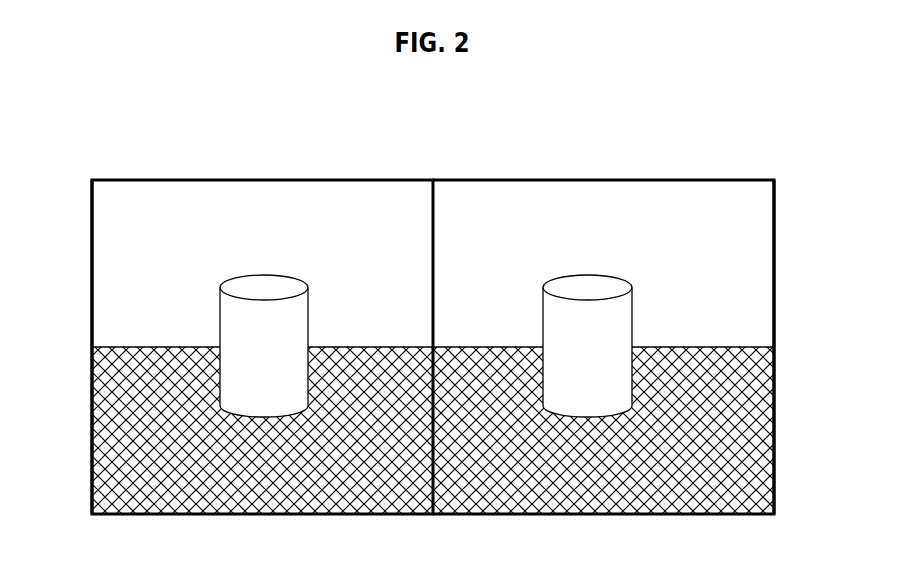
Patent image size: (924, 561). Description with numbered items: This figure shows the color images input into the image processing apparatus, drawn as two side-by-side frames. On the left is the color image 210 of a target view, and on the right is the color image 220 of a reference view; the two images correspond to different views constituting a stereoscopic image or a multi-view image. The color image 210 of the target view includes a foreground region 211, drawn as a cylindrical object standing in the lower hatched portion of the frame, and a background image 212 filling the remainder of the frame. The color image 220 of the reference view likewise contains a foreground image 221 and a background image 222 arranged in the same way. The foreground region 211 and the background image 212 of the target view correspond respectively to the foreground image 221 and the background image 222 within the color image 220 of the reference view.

The color image of target view 210 is at (257, 180).
The color image of reference view 220 is at (600, 180).
The foreground region 211 is at (222, 385).
The foreground image 221 is at (623, 387).
The background image 212 is at (108, 274).
The background image 222 is at (758, 272).